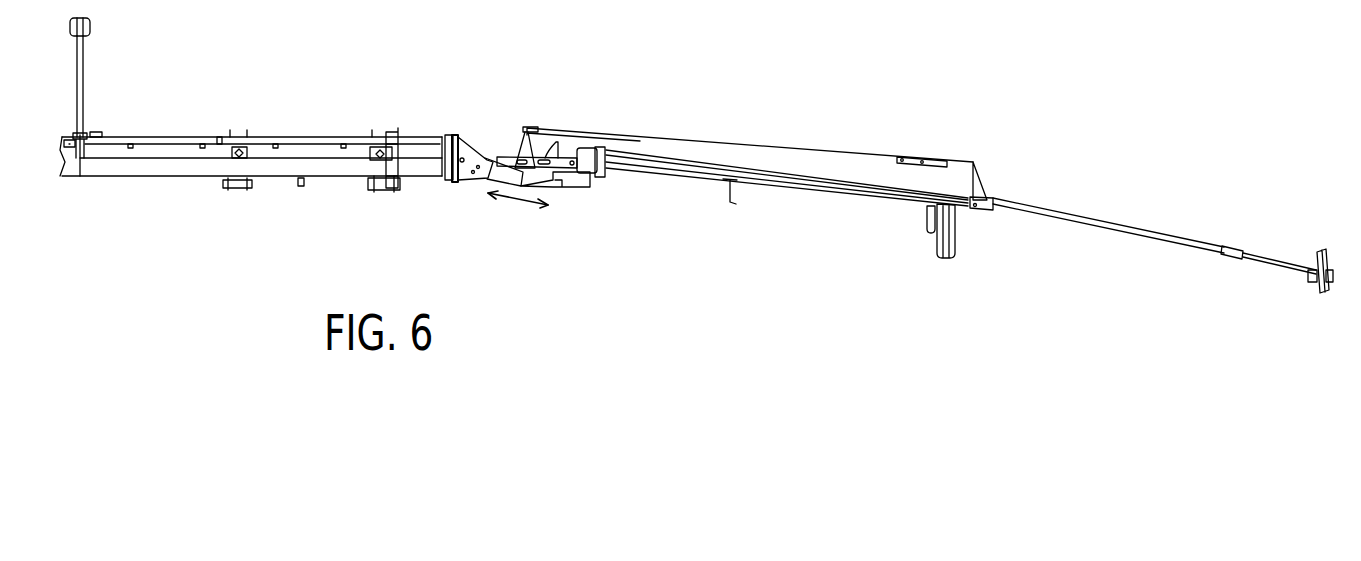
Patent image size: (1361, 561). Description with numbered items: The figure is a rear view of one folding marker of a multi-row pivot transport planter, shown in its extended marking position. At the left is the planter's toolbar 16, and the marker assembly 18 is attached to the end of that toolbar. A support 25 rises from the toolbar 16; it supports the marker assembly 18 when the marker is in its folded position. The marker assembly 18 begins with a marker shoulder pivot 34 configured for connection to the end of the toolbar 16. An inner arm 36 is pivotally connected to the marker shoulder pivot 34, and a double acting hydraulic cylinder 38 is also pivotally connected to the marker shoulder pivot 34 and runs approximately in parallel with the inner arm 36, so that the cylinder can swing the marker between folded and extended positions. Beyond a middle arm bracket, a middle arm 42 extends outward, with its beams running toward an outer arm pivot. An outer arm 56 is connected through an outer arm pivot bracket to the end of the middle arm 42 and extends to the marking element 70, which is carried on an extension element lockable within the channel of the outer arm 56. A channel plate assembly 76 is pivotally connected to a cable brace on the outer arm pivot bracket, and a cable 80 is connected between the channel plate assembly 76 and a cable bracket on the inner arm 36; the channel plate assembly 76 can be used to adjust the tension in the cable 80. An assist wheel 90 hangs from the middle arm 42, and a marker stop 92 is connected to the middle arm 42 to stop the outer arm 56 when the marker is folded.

The toolbar 16 is at (160, 178).
The left marker assembly 18 is at (822, 44).
The support 25 is at (86, 95).
The marker shoulder pivot 34 is at (468, 138).
The inner arm 36 is at (500, 157).
The double acting hydraulic cylinder 38 is at (490, 180).
The middle arm 42 is at (842, 197).
The outer arm 56 is at (1130, 237).
The marking element 70 is at (1333, 270).
The channel plate assembly 76 is at (947, 162).
The cable 80 is at (760, 145).
The assist wheel 90 is at (957, 240).
The marker stop 92 is at (718, 185).